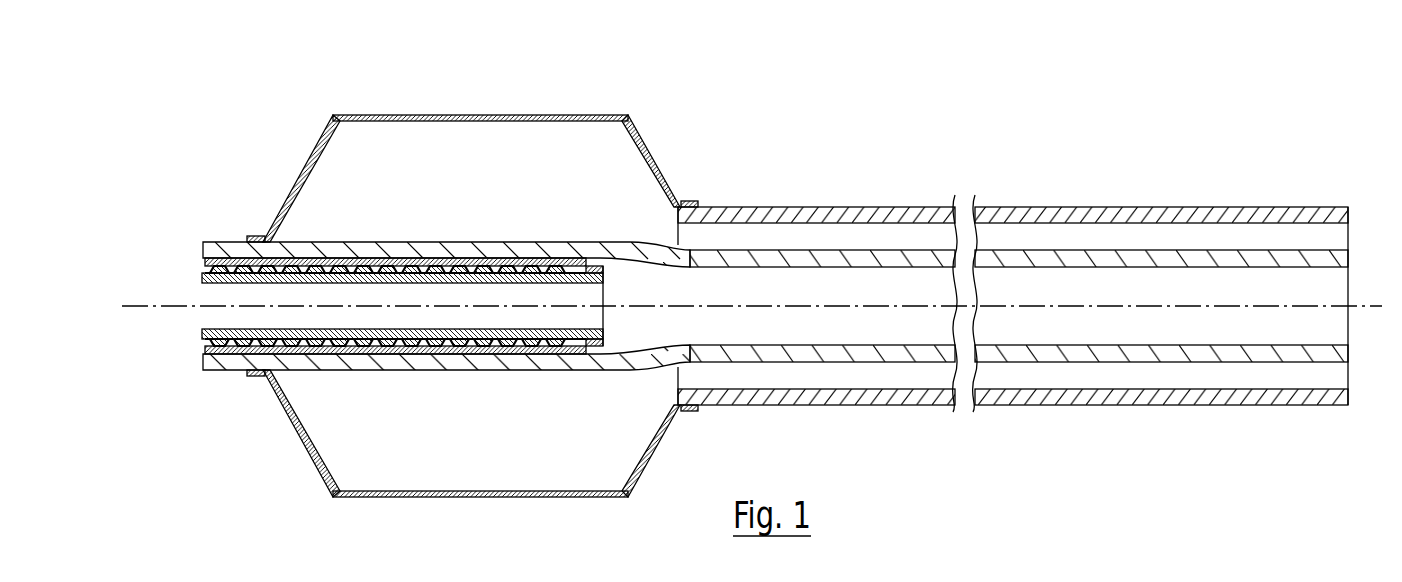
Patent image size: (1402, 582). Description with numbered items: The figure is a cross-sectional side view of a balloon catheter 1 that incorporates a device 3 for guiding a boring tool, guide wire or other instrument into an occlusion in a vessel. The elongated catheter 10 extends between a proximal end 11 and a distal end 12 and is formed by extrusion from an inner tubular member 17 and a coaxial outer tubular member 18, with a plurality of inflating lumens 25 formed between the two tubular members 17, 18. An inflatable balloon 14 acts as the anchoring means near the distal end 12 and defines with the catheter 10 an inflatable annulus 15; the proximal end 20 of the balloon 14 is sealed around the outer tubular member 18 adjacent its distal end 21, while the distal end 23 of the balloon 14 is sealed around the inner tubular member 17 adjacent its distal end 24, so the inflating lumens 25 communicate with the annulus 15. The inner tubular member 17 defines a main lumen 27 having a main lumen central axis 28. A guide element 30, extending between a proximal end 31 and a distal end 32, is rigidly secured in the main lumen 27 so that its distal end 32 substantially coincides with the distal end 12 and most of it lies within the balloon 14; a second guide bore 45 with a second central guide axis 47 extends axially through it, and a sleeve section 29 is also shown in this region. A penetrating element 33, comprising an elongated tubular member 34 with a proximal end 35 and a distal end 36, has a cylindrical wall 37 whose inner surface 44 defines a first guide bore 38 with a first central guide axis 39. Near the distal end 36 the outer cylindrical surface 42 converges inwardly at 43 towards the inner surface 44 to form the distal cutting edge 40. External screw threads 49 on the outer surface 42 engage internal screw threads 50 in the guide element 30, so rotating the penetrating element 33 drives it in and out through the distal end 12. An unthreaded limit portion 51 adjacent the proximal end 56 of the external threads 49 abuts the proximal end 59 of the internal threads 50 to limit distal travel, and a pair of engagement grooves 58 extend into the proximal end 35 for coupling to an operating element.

The balloon catheter 1 is at (850, 451).
The device 3 is at (512, 180).
The elongated catheter 10 is at (893, 208).
The proximal end 11 is at (1350, 330).
The distal end 12 is at (200, 247).
The inflatable balloon 14 is at (528, 496).
The inflatable annulus 15 is at (386, 139).
The inner tubular member 17 is at (1018, 352).
The outer tubular member 18 is at (1000, 251).
The proximal end of the balloon 20 is at (690, 202).
The distal end of the outer tubular member 21 is at (677, 222).
The distal end of the balloon 23 is at (254, 237).
The distal end of the inner tubular member 24 is at (237, 365).
The inflating lumens 25 is at (1089, 238).
The main lumen 27 is at (1146, 285).
The main lumen central axis 28 is at (1185, 305).
The sleeve section 29 is at (290, 366).
The guide element 30 is at (282, 378).
The proximal end of the guide element 31 is at (378, 258).
The distal end of the guide element 32 is at (202, 342).
The penetrating element 33 is at (495, 346).
The elongated tubular member 34 is at (478, 346).
The proximal end of the penetrating element 35 is at (605, 298).
The distal end of the penetrating element 36 is at (202, 296).
The cylindrical wall 37 is at (477, 262).
The first guide bore 38 is at (573, 292).
The first central guide axis 39 is at (158, 306).
The distal cutting edge 40 is at (200, 318).
The outer cylindrical surface 42 is at (388, 272).
The distal inward convergence 43 is at (225, 347).
The inner surface 44 is at (308, 330).
The second guide bore 45 is at (294, 272).
The second central guide axis 47 is at (172, 307).
The external screw threads 49 is at (427, 346).
The internal screw threads 50 is at (202, 267).
The unthreaded limit portion 51 is at (546, 347).
The proximal end of the external screw threads 56 is at (531, 262).
The engagement grooves 58 is at (605, 273).
The proximal end of the internal screw threads 59 is at (378, 348).